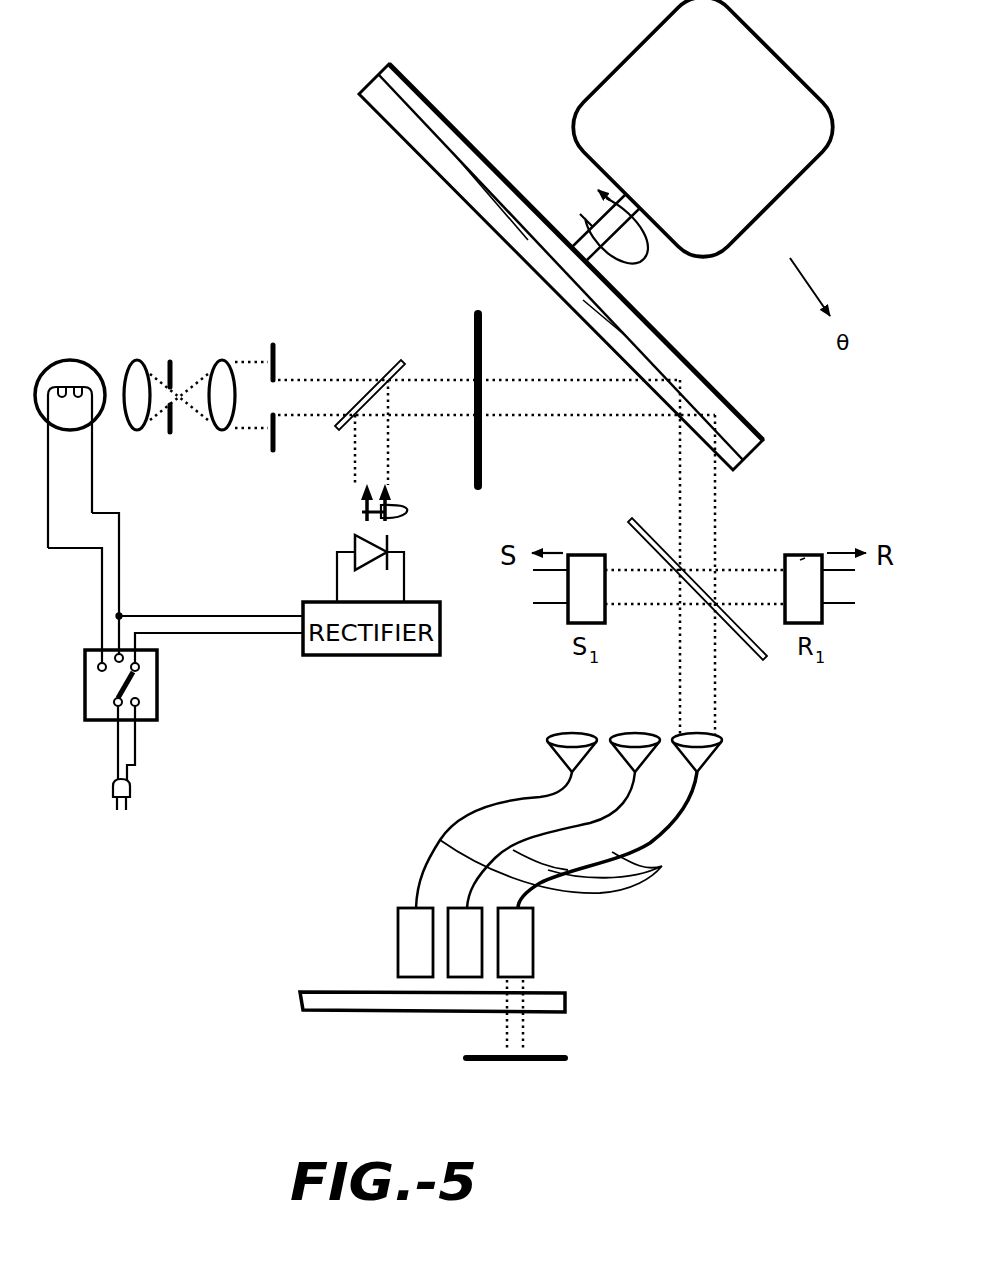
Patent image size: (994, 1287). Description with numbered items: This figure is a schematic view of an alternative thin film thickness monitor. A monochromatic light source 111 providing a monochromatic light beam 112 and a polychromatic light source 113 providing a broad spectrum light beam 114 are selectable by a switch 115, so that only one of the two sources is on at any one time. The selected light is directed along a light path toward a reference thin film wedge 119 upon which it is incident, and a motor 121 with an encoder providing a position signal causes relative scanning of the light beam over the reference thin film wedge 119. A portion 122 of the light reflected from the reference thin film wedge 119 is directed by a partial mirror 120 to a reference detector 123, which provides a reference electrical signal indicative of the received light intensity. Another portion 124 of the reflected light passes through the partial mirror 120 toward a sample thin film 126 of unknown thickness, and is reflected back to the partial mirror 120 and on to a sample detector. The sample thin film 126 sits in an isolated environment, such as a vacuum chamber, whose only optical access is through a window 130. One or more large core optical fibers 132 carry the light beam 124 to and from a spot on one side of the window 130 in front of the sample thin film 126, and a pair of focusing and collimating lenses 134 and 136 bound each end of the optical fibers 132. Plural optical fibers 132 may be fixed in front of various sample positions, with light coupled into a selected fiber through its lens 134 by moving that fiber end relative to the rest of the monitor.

The monochromatic light source 111 is at (323, 483).
The monochromatic light beam 112 is at (412, 506).
The polychromatic light source 113 is at (67, 360).
The broad spectrum light beam 114 is at (183, 378).
The switch 115 is at (145, 683).
The reference thin film wedge 119 is at (733, 452).
The partial mirror 120 is at (644, 527).
The motor 121 is at (747, 207).
The portion of reflected light 122 is at (747, 568).
The reference detector 123 is at (803, 559).
The light beam 124 is at (673, 632).
The sample thin film 126 is at (557, 1064).
The window 130 is at (330, 1000).
The optical fibers 132 is at (660, 867).
The lens 134 is at (722, 740).
The lens 136 is at (520, 937).